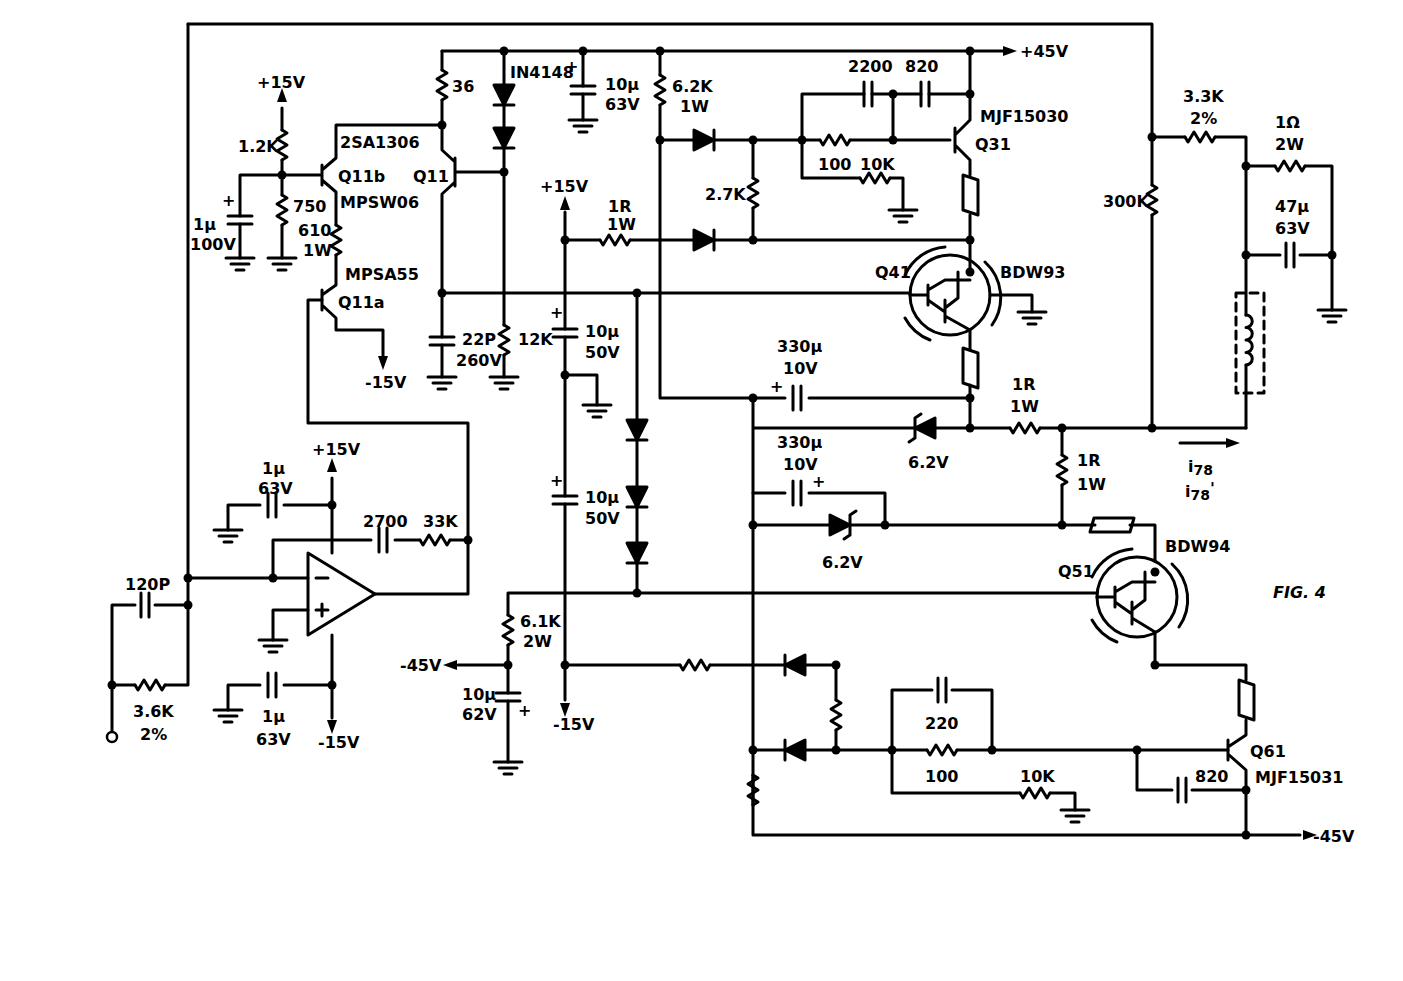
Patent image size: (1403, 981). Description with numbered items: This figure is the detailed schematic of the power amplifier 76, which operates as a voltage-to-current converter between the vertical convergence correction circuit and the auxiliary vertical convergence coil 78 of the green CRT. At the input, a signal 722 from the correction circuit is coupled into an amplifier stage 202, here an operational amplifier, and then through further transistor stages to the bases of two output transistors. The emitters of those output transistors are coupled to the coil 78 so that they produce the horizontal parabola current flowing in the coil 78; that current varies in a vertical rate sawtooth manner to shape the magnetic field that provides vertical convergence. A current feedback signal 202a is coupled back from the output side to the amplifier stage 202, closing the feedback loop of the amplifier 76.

The auxiliary vertical convergence coil 78 is at (1258, 342).
The amplifier stage 202 is at (318, 628).
The current feedback signal 202a is at (188, 487).
The signal 722 is at (117, 742).
The power amplifier 76 is at (666, 759).